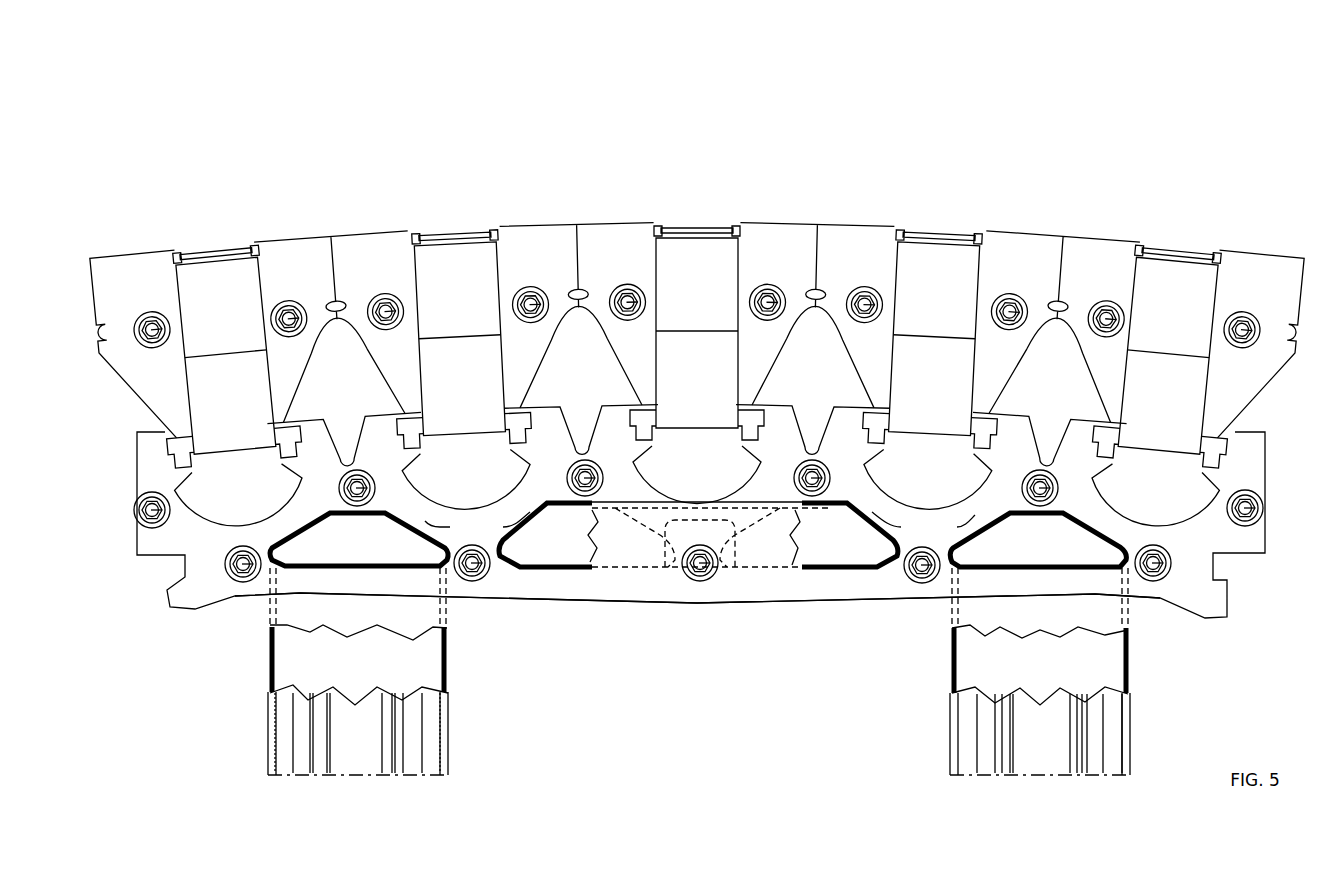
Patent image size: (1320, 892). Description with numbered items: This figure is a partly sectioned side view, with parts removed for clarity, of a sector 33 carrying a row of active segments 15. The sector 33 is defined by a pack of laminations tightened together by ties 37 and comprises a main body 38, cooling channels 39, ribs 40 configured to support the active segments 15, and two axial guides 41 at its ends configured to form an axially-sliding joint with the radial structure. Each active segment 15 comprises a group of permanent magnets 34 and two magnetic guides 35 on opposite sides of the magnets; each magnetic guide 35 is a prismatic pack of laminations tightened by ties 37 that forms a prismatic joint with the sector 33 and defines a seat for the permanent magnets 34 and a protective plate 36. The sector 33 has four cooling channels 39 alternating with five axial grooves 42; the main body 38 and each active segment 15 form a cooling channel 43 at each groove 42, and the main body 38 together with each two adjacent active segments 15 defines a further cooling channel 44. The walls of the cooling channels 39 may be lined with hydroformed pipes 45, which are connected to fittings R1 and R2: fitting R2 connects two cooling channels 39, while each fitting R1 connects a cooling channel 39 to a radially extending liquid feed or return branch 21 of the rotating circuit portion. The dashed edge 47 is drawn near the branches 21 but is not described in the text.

The active segment 15 is at (150, 243).
The branch 21 is at (434, 736).
The sector 33 is at (760, 592).
The permanent magnets 34 is at (196, 297).
The magnetic guide 35 is at (133, 262).
The protective plate 36 is at (208, 252).
The ties 37 is at (168, 327).
The main body 38 is at (628, 594).
The cooling channel 39 is at (355, 545).
The ribs 40 is at (182, 432).
The axial guide 41 is at (140, 580).
The axial groove 42 is at (235, 527).
The cooling channel 43 is at (230, 477).
The further cooling channel 44 is at (343, 385).
The hydroformed pipes 45 is at (700, 524).
The hidden edge 47 is at (418, 610).
The fitting R1 is at (268, 612).
The fitting R2 is at (745, 520).